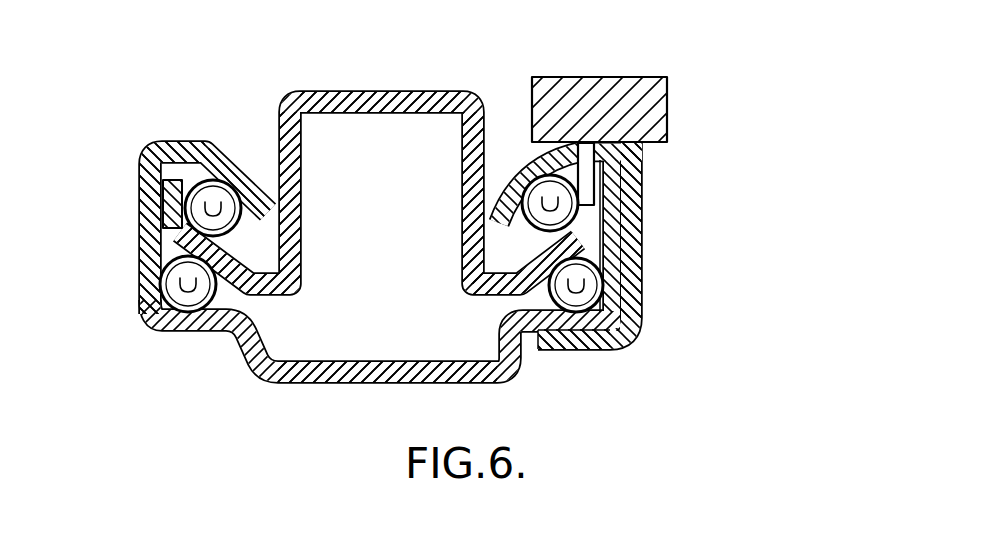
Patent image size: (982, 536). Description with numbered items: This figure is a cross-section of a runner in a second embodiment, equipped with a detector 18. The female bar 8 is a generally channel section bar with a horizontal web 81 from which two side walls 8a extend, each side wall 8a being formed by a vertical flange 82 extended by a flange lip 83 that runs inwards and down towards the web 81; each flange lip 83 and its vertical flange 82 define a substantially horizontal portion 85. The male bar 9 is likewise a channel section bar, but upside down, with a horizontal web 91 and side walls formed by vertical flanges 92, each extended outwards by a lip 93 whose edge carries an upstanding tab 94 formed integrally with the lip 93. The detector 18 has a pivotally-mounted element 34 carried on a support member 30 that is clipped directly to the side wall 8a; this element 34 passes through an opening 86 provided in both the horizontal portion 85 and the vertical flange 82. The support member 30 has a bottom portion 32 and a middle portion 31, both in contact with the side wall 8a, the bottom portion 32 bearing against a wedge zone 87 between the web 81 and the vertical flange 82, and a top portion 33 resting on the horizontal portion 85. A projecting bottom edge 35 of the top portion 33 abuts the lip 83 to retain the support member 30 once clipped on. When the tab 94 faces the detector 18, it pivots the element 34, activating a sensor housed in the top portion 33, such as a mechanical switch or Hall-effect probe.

The female bar 8 is at (328, 265).
The side wall 8a is at (152, 188).
The male bar 9 is at (379, 177).
The detector 18 is at (634, 81).
The support member 30 is at (635, 236).
The middle portion 31 is at (644, 279).
The bottom portion 32 is at (572, 349).
The top portion 33 is at (612, 95).
The pivotally-mounted element 34 is at (596, 150).
The bottom edge 35 is at (518, 147).
The horizontal web 81 is at (362, 383).
The vertical flange 82 is at (141, 272).
The flange lip 83 is at (240, 173).
The horizontal portion 85 is at (178, 141).
The opening 86 is at (581, 172).
The wedge zone 87 is at (540, 334).
The horizontal web 91 is at (344, 88).
The vertical flange 92 is at (466, 204).
The lip 93 is at (274, 295).
The upstanding tab 94 is at (165, 184).